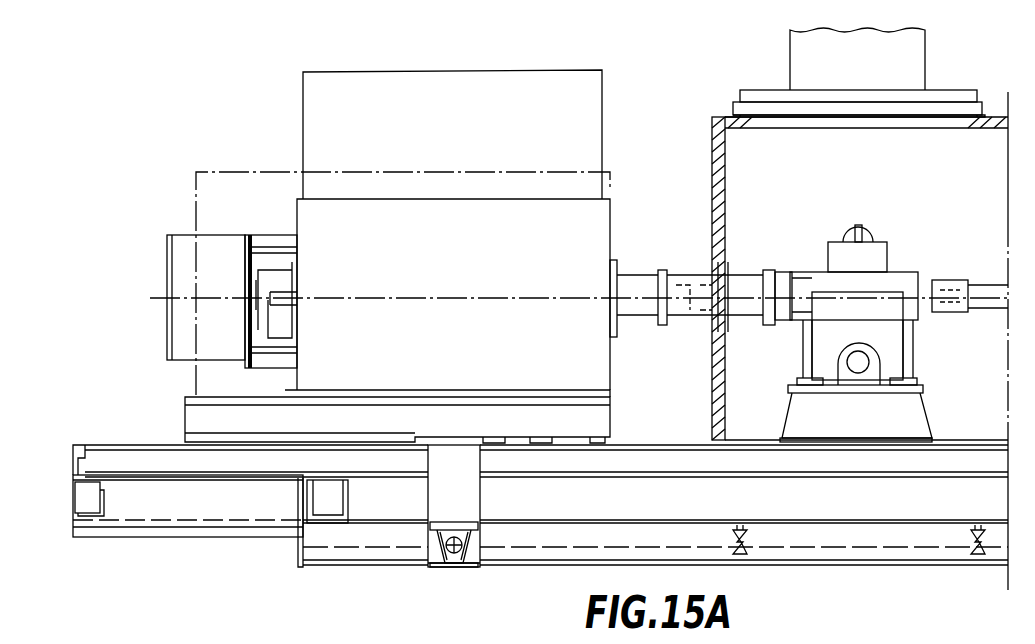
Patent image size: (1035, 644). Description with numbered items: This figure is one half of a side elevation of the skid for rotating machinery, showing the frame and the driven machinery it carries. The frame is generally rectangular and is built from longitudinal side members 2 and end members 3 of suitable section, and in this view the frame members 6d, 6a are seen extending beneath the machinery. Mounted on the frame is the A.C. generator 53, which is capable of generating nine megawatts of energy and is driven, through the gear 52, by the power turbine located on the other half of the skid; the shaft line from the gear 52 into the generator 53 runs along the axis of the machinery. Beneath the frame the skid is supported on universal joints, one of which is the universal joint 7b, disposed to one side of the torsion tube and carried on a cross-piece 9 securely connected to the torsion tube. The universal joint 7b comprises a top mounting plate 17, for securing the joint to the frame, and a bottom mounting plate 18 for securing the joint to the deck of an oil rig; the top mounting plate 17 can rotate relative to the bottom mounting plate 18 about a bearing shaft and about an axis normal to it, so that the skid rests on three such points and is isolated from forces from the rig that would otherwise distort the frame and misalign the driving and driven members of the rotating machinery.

The A.C. generator 53 is at (478, 265).
The gear 52 is at (878, 315).
The cross-piece 9 is at (462, 490).
The top mounting plate 17 is at (462, 523).
The bottom mounting plate 18 is at (456, 567).
The universal joint 7b is at (438, 568).
The longitudinal side member 2 is at (172, 463).
The end member 3 is at (80, 456).
The frame beam 6d is at (205, 505).
The frame beam 6a is at (833, 535).